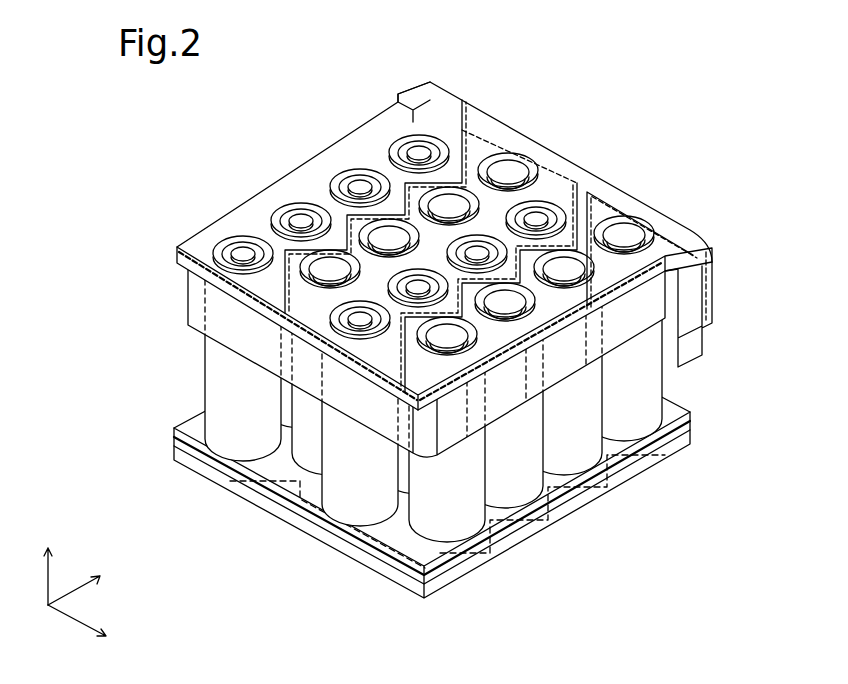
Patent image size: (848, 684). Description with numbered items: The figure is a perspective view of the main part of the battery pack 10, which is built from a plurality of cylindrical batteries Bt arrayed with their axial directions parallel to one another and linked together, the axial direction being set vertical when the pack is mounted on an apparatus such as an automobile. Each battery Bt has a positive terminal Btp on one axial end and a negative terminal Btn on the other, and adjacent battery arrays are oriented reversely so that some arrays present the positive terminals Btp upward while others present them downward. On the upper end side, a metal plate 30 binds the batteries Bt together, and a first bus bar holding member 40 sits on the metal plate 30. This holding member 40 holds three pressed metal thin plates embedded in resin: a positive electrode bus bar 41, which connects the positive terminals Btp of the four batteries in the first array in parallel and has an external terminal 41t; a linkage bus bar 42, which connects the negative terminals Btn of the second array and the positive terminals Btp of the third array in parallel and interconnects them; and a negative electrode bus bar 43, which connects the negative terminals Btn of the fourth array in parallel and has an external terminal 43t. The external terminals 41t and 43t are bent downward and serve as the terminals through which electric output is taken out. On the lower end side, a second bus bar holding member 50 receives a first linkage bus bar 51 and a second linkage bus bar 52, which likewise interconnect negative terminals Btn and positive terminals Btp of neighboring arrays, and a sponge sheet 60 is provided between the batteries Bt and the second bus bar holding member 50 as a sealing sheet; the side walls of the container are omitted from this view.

The battery pack 10 is at (626, 99).
The metal plate 30 is at (197, 300).
The first bus bar holding member 40 is at (676, 222).
The positive electrode bus bar 41 is at (460, 99).
The external terminal 41t is at (392, 120).
The linkage bus bar 42 is at (490, 128).
The negative electrode bus bar 43 is at (610, 195).
The external terminal 43t is at (695, 343).
The second bus bar holding member 50 is at (628, 476).
The first linkage bus bar 51 is at (236, 470).
The second linkage bus bar 52 is at (578, 507).
The sponge sheet 60 is at (676, 410).
The battery Bt is at (338, 497).
The negative terminal Btn is at (327, 270).
The positive terminal Btp is at (243, 255).